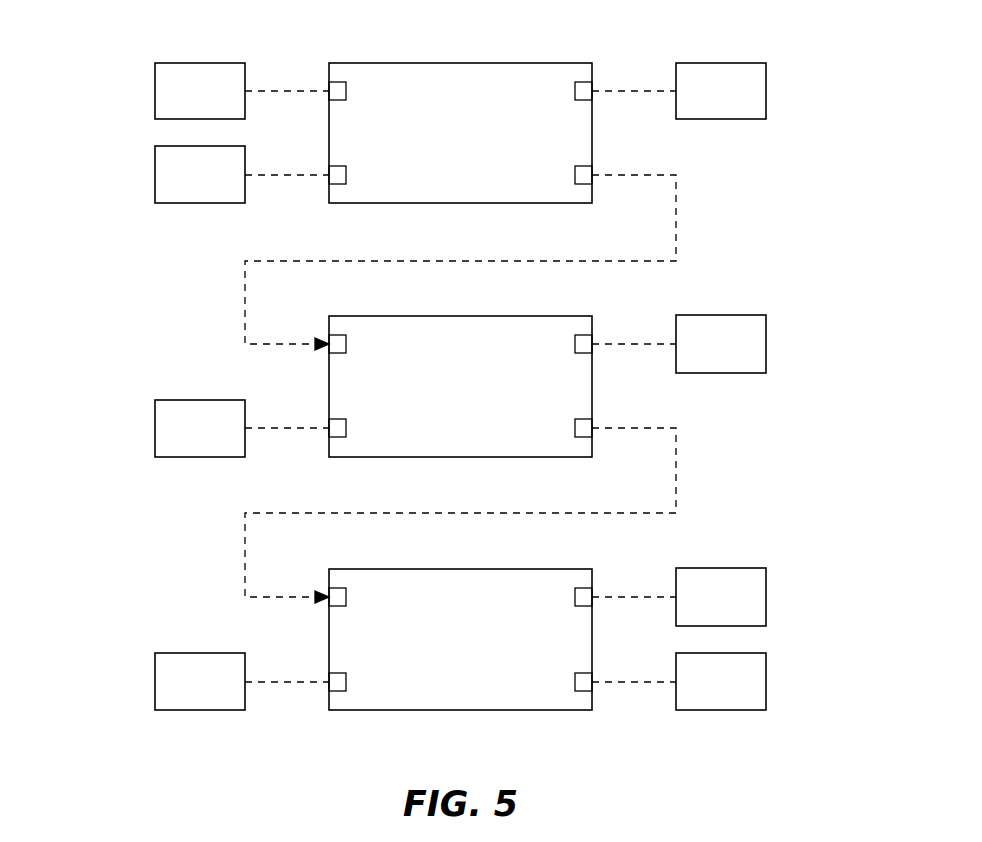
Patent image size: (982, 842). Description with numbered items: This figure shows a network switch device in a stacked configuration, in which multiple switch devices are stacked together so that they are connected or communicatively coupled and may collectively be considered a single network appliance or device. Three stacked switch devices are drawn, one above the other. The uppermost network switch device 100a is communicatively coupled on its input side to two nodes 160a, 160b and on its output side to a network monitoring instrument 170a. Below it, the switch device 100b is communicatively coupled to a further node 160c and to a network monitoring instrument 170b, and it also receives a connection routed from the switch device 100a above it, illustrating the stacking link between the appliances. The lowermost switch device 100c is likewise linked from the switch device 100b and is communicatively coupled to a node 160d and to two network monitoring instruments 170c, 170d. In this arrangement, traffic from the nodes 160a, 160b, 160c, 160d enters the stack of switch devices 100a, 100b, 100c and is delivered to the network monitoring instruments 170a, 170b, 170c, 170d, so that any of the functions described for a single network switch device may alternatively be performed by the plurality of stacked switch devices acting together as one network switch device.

The network switch device 100a is at (458, 63).
The switch device 100b is at (458, 316).
The switch device 100c is at (458, 569).
The node 160a is at (155, 91).
The node 160b is at (155, 175).
The node 160c is at (155, 428).
The node 160d is at (155, 682).
The network monitoring instrument 170a is at (766, 90).
The network monitoring instrument 170b is at (766, 343).
The network monitoring instrument 170c is at (766, 596).
The network monitoring instrument 170d is at (766, 681).